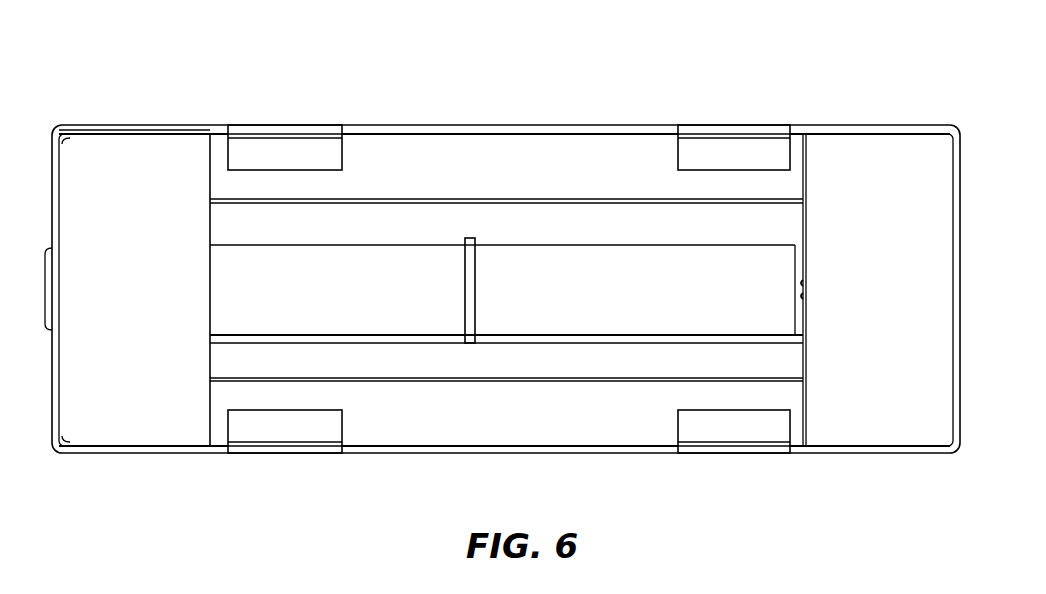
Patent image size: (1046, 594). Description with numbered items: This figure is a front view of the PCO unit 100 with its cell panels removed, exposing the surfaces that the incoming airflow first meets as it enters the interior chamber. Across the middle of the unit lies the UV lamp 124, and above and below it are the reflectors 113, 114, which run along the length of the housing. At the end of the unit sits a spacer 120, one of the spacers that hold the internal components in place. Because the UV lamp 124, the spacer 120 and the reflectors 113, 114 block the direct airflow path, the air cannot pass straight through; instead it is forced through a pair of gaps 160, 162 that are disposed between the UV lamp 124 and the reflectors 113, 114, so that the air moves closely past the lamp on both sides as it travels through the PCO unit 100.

The PCO unit 100 is at (140, 78).
The reflector 113 is at (639, 423).
The reflector 114 is at (623, 148).
The spacer 120 is at (125, 422).
The UV lamp 124 is at (703, 267).
The gap 160 is at (558, 220).
The gap 162 is at (413, 367).